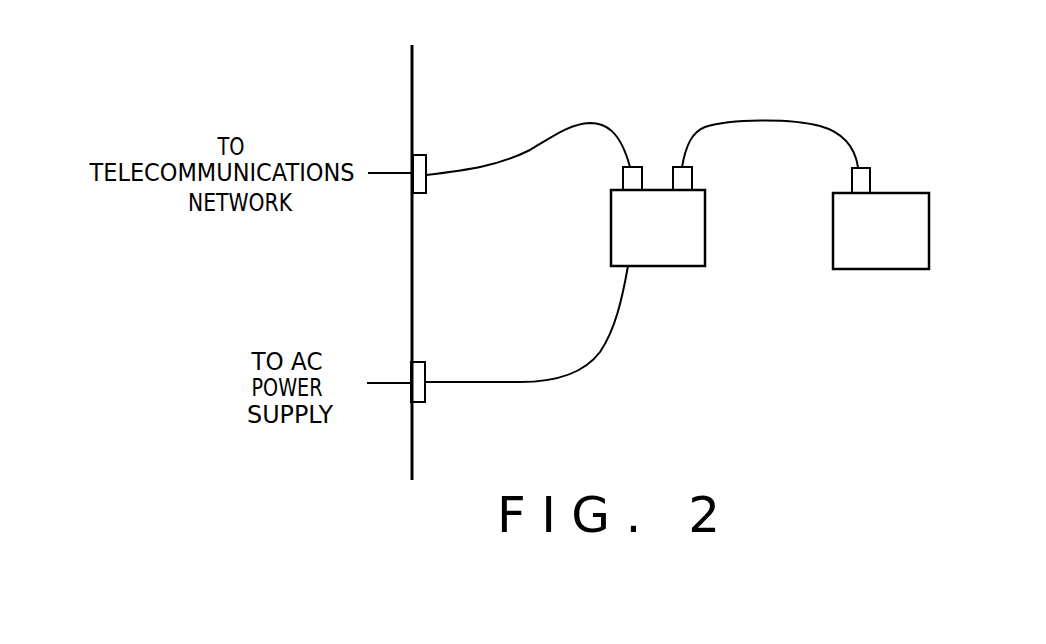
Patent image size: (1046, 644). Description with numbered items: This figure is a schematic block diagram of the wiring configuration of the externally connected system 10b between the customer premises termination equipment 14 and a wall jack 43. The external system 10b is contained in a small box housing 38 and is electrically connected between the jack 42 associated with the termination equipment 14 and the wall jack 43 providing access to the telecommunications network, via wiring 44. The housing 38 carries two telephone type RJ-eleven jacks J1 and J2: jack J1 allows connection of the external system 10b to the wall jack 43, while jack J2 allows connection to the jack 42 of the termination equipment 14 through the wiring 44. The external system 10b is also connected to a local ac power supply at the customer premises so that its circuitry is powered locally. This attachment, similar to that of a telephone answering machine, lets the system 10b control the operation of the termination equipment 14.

The external system 10b is at (635, 245).
The customer premises termination equipment 14 is at (862, 249).
The external housing 38 is at (687, 266).
The jack associated with the termination equipment 42 is at (870, 175).
The wall jack 43 is at (426, 185).
The wiring 44 is at (593, 122).
The jack J1 is at (650, 163).
The jack J2 is at (675, 165).